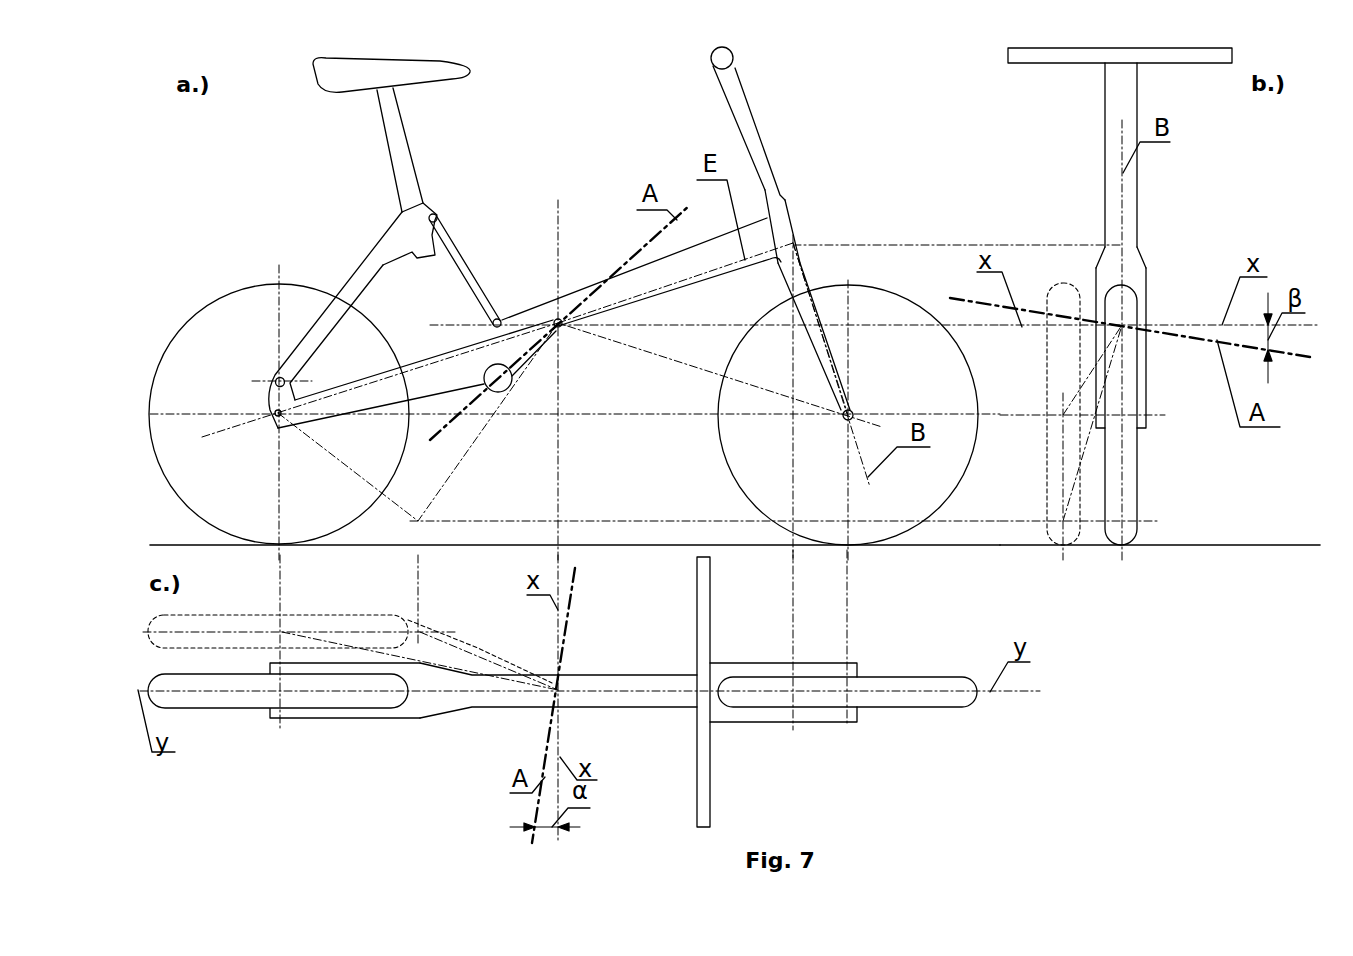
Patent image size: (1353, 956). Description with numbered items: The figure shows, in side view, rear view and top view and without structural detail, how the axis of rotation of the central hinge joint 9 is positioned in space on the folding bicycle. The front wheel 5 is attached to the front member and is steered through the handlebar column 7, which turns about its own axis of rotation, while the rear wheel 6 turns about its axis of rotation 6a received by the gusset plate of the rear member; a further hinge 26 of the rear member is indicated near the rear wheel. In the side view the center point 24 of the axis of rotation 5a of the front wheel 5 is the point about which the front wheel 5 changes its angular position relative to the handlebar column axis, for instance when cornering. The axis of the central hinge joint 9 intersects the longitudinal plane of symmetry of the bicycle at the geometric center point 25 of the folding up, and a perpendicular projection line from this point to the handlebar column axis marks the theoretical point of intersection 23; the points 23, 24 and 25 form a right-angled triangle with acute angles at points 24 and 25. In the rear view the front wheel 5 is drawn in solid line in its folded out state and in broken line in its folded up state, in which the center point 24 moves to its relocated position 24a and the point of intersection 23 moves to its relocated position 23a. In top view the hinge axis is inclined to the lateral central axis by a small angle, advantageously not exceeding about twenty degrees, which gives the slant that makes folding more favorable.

In FIG. 7a, the front wheel 5 is at (877, 313).
In FIG. 7b, the front wheel 5 is at (1128, 493).
In FIG. 7c, the front wheel 5 is at (880, 702).
In FIG. 7a, the axis of rotation of the front wheel 5a is at (845, 420).
In FIG. 7c, the axis of rotation of the front wheel 5a is at (848, 630).
In FIG. 7a, the rear wheel 6 is at (257, 317).
In FIG. 7c, the rear wheel 6 is at (333, 700).
In FIG. 7c, the axis of rotation of the rear wheel 6a is at (282, 728).
In FIG. 7a, the handlebar column 7 is at (763, 187).
In FIG. 7a, the central hinge joint 9 is at (558, 320).
In FIG. 7c, the central hinge joint 9 is at (558, 688).
In FIG. 7a, the theoretical point of intersection 23 is at (793, 243).
In FIG. 7b, the theoretical point of intersection 23 is at (1123, 247).
In FIG. 7c, the theoretical point of intersection 23 is at (792, 688).
In FIG. 7a, the relocated position of the point of intersection 23a is at (418, 522).
In FIG. 7b, the relocated position of the point of intersection 23a is at (1063, 521).
In FIG. 7c, the relocated position of the point of intersection 23a is at (420, 632).
In FIG. 7a, the center point of the axis of rotation of the front wheel 24 is at (852, 412).
In FIG. 7b, the center point of the axis of rotation of the front wheel 24 is at (1122, 415).
In FIG. 7c, the center point of the axis of rotation of the front wheel 24 is at (848, 690).
In FIG. 7b, the relocated position of the center point 24a is at (1063, 415).
In FIG. 7c, the relocated position of the center point 24a is at (282, 632).
In FIG. 7a, the geometric center point of the folding up 25 is at (560, 327).
In FIG. 7b, the geometric center point of the folding up 25 is at (1122, 325).
In FIG. 7c, the geometric center point of the folding up 25 is at (557, 690).
In FIG. 7a, the rear pivot 26 is at (249, 378).
In FIG. 7c, the rear pivot 26 is at (278, 693).